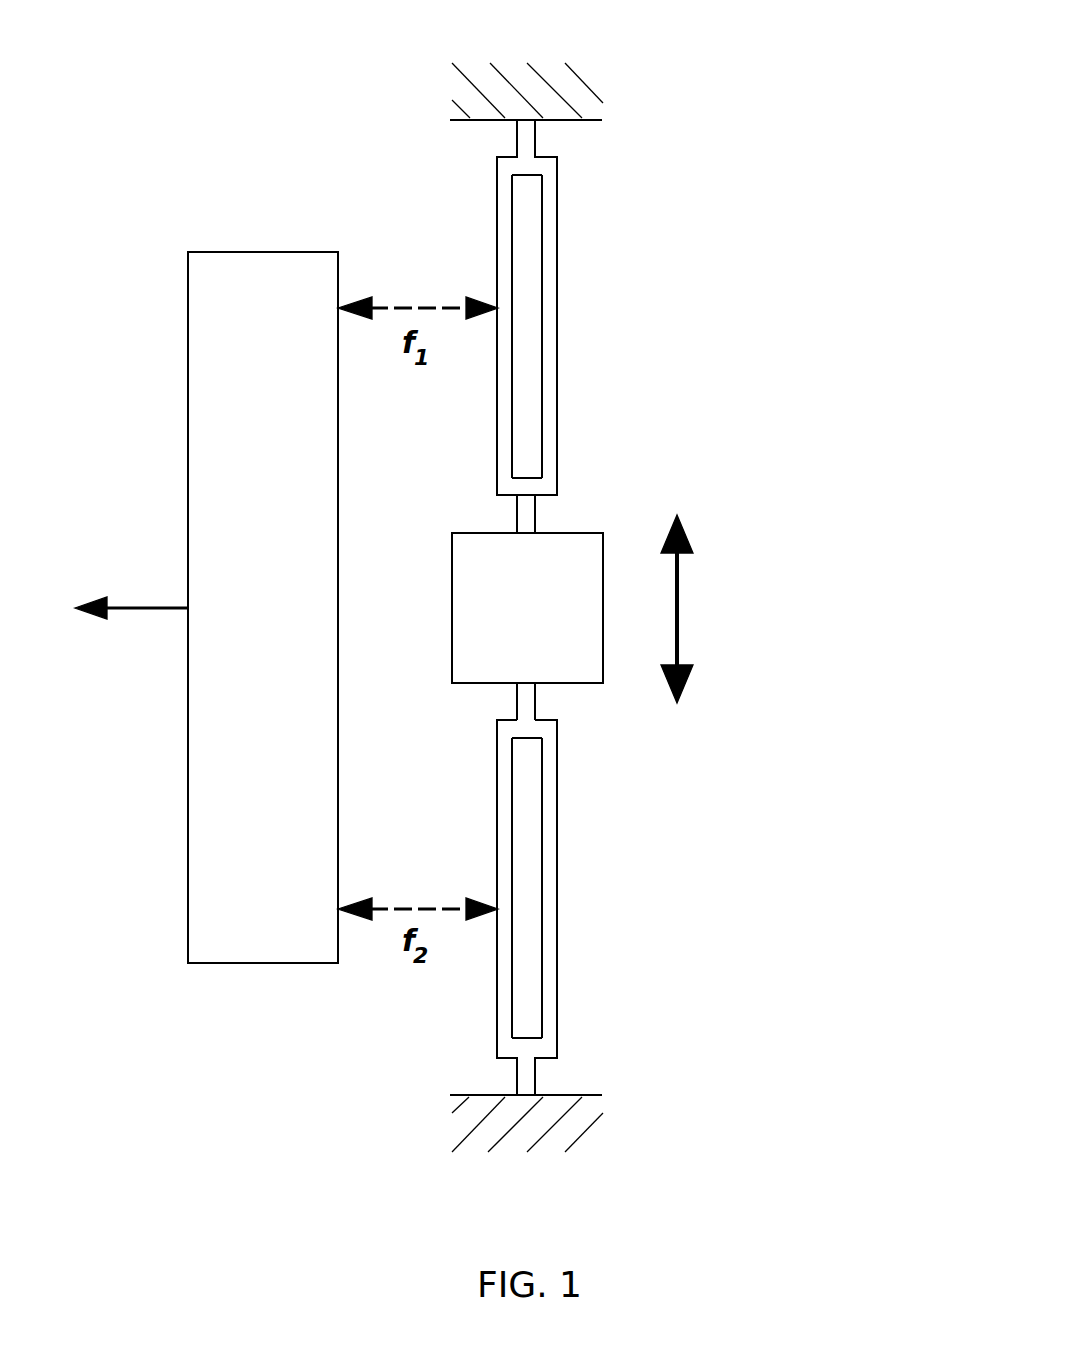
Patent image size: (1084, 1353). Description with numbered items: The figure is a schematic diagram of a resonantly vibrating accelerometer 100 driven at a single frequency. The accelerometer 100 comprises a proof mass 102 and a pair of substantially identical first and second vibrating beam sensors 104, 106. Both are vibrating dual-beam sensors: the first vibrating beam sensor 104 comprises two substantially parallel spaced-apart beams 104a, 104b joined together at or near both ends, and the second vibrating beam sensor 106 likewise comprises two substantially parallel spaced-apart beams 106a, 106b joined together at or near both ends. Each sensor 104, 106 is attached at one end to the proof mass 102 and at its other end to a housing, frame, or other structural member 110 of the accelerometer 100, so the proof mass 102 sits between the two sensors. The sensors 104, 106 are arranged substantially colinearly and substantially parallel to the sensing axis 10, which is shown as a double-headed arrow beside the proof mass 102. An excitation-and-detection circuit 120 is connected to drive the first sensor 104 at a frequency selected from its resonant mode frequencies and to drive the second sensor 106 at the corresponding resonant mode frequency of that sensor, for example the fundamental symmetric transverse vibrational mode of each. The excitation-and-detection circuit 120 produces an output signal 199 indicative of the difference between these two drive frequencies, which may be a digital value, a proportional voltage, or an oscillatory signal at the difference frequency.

The resonantly vibrating accelerometer 100 is at (838, 225).
The sensing axis 10 is at (682, 603).
The proof mass 102 is at (505, 585).
The first vibrating beam sensor 104 is at (627, 307).
The beam 104a is at (505, 262).
The beam 104b is at (667, 213).
The second vibrating beam sensor 106 is at (637, 907).
The beam 106a is at (505, 878).
The beam 106b is at (685, 850).
The structural member 110 is at (545, 102).
The excitation-and-detection circuit 120 is at (243, 623).
The output signal 199 is at (147, 607).